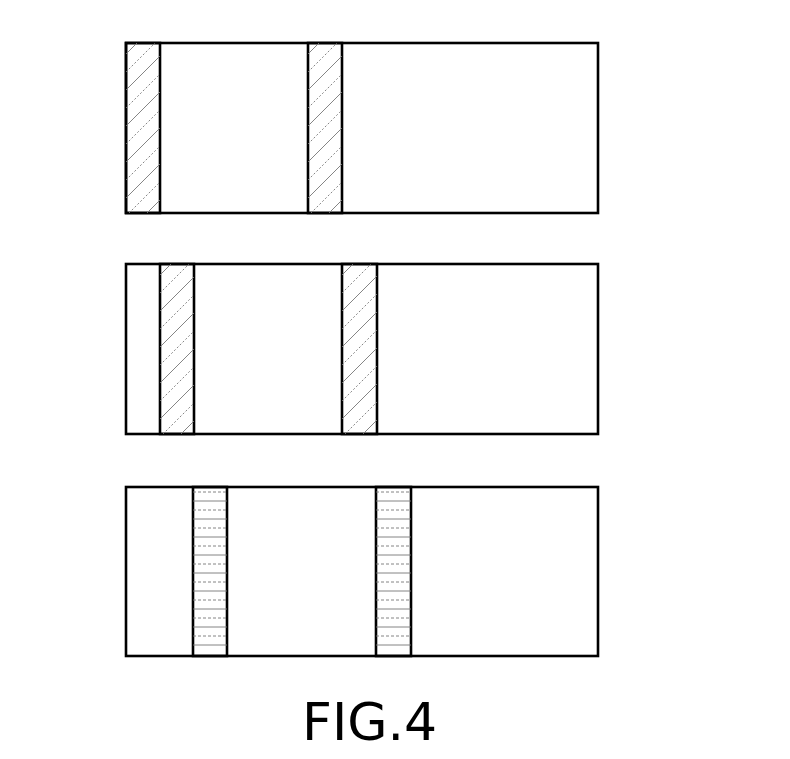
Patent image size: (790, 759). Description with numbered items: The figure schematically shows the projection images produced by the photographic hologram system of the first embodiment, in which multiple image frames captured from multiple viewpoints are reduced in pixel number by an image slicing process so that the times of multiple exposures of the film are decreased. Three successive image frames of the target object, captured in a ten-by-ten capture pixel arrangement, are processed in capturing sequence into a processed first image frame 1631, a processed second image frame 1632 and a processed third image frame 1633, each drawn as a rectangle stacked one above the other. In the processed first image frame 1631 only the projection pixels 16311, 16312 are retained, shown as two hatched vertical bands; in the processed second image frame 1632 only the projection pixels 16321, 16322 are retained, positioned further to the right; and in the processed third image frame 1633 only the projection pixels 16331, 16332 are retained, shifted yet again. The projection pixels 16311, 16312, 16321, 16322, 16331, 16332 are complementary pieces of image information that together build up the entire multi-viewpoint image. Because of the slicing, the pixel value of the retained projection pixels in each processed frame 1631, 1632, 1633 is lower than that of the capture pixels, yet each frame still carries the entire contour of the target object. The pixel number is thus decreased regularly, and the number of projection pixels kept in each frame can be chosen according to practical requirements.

The processed first image frame 1631 is at (598, 137).
The projection pixel 16311 is at (143, 52).
The projection pixel 16312 is at (325, 52).
The processed second image frame 1632 is at (598, 347).
The projection pixel 16321 is at (177, 273).
The projection pixel 16322 is at (359, 273).
The processed third image frame 1633 is at (598, 573).
The projection pixel 16331 is at (210, 498).
The projection pixel 16332 is at (392, 498).